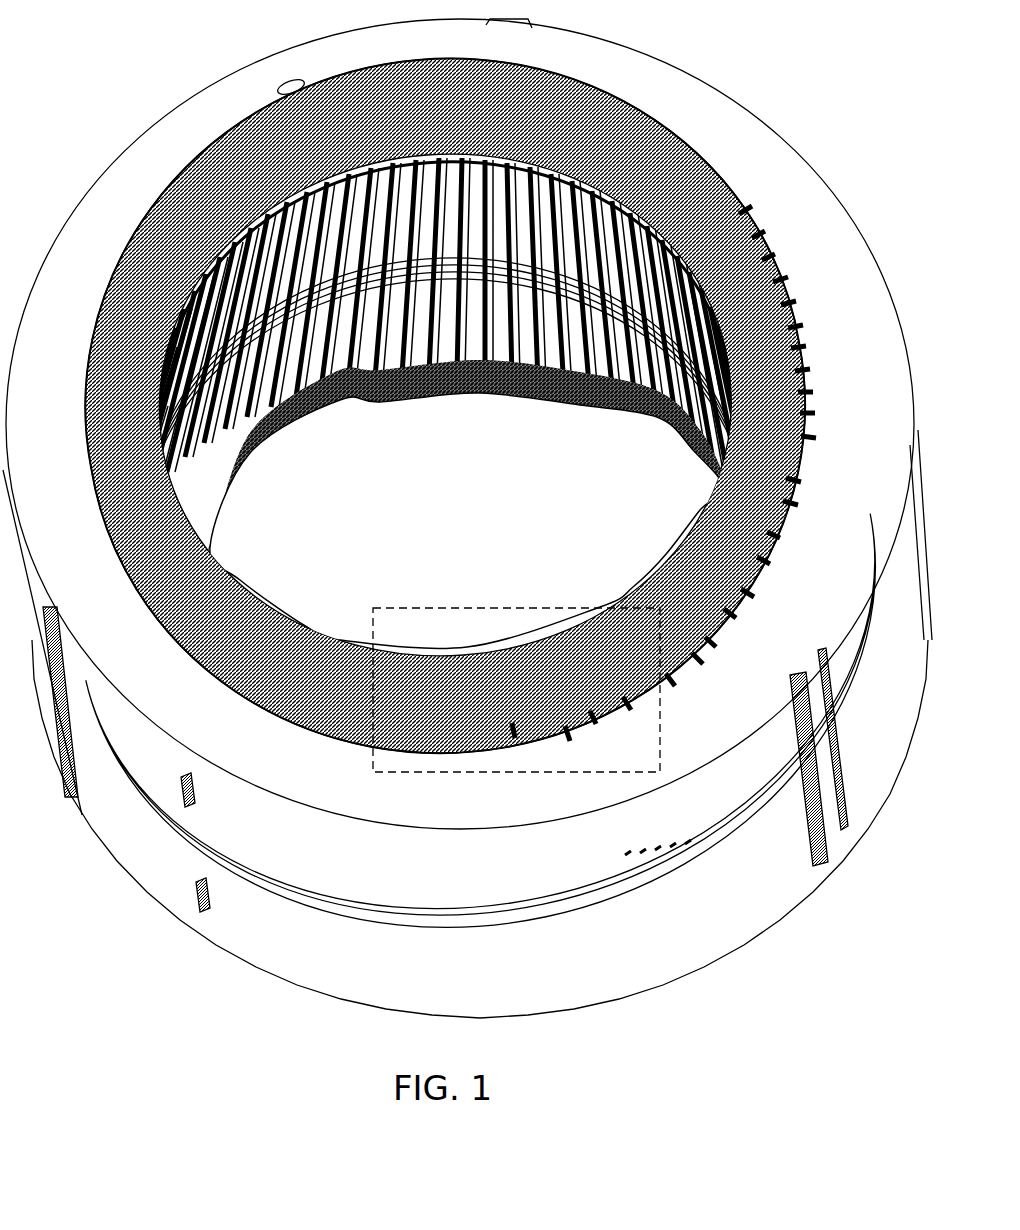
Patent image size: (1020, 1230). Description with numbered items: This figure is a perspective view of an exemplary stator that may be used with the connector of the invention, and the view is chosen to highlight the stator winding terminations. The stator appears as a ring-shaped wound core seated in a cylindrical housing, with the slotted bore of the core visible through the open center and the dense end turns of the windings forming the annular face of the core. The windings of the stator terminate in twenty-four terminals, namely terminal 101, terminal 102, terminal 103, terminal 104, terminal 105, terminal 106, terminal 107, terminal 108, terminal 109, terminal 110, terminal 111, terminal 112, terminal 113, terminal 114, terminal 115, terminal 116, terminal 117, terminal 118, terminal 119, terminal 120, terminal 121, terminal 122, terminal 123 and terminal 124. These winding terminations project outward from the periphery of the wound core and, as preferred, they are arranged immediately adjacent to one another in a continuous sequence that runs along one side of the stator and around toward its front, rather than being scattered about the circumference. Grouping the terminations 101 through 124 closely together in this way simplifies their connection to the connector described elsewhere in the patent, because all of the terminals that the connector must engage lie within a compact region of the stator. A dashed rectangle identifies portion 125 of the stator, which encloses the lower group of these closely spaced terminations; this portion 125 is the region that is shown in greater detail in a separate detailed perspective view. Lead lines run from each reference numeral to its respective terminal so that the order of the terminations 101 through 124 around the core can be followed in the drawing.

The terminal 101 is at (745, 210).
The terminal 102 is at (758, 235).
The terminal 103 is at (768, 257).
The terminal 104 is at (780, 280).
The terminal 105 is at (788, 303).
The terminal 106 is at (795, 327).
The terminal 107 is at (798, 347).
The terminal 108 is at (802, 370).
The terminal 109 is at (805, 392).
The terminal 110 is at (807, 413).
The terminal 111 is at (808, 437).
The terminal 112 is at (793, 480).
The terminal 113 is at (790, 503).
The terminal 114 is at (773, 535).
The terminal 115 is at (763, 560).
The terminal 116 is at (747, 593).
The terminal 117 is at (730, 613).
The terminal 118 is at (710, 642).
The terminal 119 is at (697, 658).
The terminal 120 is at (670, 680).
The terminal 121 is at (627, 703).
The terminal 122 is at (593, 717).
The terminal 123 is at (567, 733).
The terminal 124 is at (513, 730).
The portion 125 is at (491, 600).